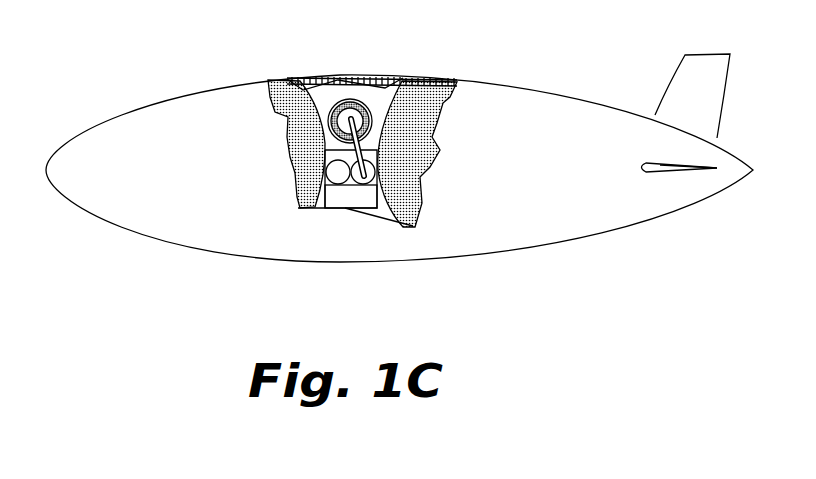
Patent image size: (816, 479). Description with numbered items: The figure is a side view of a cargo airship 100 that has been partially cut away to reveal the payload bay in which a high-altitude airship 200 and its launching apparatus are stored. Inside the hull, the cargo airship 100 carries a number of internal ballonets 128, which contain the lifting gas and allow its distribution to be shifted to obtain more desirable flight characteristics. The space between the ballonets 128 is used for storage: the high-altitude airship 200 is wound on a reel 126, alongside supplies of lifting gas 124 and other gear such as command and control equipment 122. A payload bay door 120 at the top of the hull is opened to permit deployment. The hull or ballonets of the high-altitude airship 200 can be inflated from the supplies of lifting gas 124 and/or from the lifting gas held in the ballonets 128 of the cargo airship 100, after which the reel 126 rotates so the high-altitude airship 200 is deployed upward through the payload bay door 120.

The cargo airship 100 is at (105, 128).
The payload bay door 120 is at (298, 77).
The command and control equipment 122 is at (345, 203).
The supplies of lifting gas 124 is at (370, 208).
The reel 126 is at (385, 93).
The internal ballonets 128 is at (410, 200).
The high-altitude airship 200 is at (350, 95).